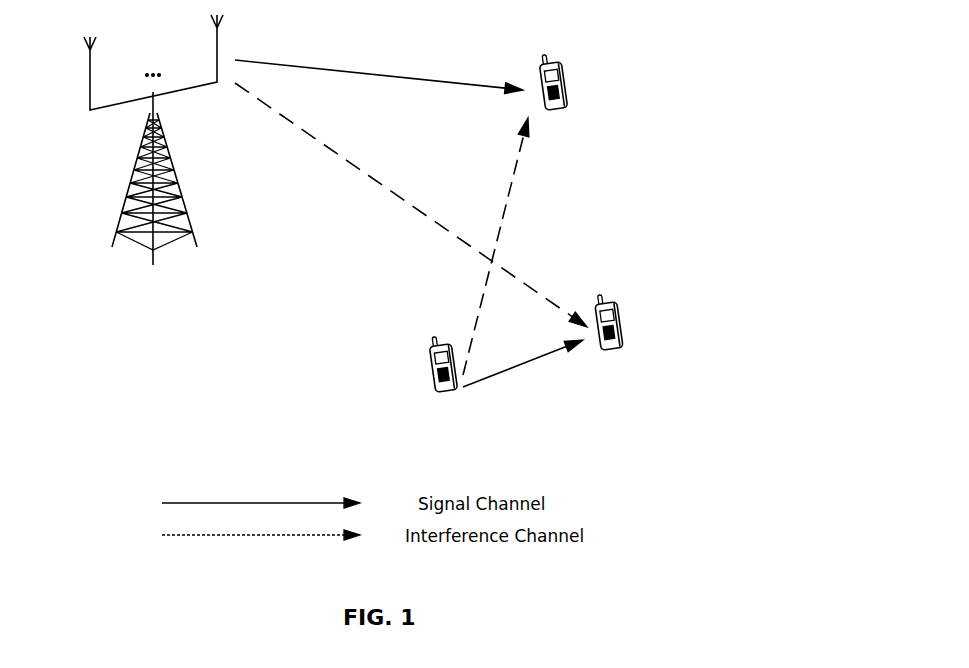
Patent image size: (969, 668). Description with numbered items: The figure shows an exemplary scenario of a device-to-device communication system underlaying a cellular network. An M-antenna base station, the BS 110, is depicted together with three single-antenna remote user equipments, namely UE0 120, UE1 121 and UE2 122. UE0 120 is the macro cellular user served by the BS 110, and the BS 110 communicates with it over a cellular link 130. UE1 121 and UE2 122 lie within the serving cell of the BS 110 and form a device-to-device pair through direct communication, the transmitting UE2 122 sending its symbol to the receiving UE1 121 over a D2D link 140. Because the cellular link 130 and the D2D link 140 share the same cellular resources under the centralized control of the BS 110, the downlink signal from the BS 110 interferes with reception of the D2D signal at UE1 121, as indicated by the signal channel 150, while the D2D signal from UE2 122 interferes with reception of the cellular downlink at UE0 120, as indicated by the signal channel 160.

The BS 110 is at (130, 200).
The UE0 120 is at (571, 95).
The UE1 121 is at (640, 334).
The UE2 122 is at (415, 378).
The cellular link 130 is at (379, 75).
The D2D link 140 is at (523, 368).
The signal channel 150 is at (411, 205).
The signal channel 160 is at (500, 246).